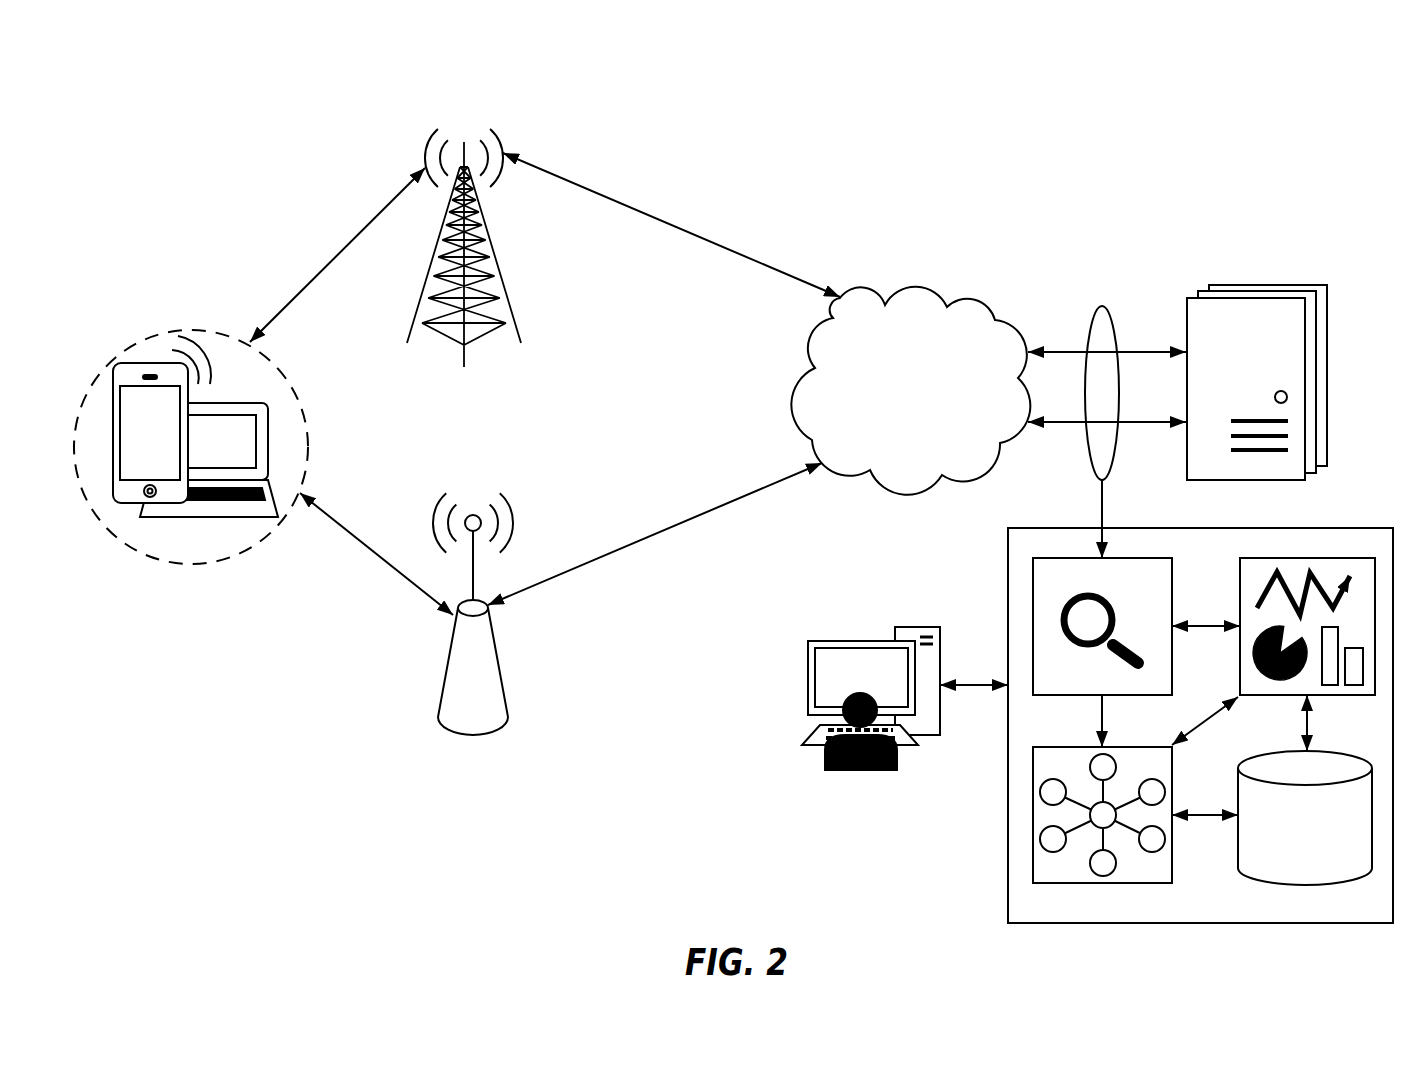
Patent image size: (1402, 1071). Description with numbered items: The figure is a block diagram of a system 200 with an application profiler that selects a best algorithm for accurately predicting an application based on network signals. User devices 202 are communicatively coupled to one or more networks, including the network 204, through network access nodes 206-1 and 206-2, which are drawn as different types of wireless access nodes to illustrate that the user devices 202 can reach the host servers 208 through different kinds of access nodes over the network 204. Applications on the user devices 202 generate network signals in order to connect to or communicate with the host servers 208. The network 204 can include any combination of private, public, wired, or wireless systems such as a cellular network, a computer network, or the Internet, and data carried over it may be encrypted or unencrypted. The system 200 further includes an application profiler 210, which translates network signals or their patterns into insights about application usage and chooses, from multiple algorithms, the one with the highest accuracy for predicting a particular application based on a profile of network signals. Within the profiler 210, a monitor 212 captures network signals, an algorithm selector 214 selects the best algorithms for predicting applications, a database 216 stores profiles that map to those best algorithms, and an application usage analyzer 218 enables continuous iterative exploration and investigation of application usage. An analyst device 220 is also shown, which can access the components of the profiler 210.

The system 200 is at (1318, 117).
The user devices 202 is at (202, 331).
The network 204 is at (898, 398).
The network access node 206-1 is at (490, 263).
The network access node 206-2 is at (498, 645).
The host servers 208 is at (1258, 263).
The application profiler 210 is at (1200, 712).
The monitor 212 is at (1102, 615).
The algorithm selector 214 is at (1102, 804).
The database 216 is at (1290, 781).
The application usage analyzer 218 is at (1307, 616).
The analyst device 220 is at (868, 613).